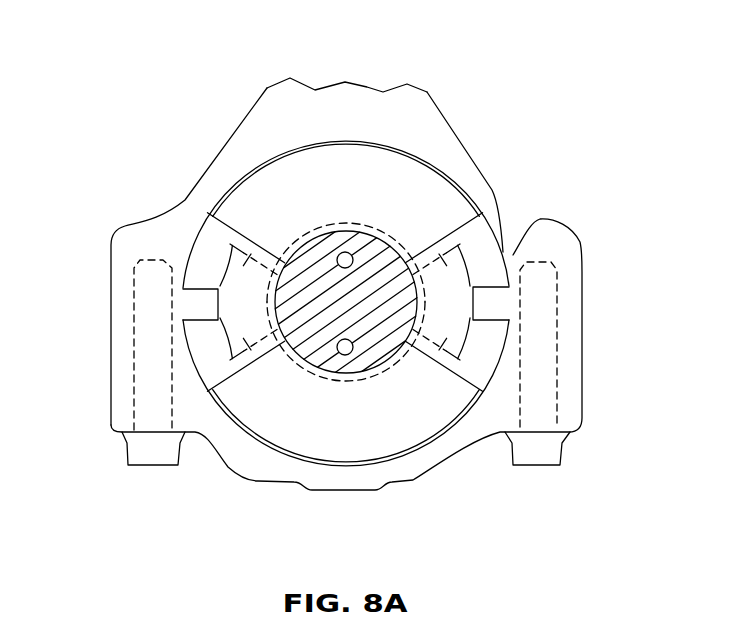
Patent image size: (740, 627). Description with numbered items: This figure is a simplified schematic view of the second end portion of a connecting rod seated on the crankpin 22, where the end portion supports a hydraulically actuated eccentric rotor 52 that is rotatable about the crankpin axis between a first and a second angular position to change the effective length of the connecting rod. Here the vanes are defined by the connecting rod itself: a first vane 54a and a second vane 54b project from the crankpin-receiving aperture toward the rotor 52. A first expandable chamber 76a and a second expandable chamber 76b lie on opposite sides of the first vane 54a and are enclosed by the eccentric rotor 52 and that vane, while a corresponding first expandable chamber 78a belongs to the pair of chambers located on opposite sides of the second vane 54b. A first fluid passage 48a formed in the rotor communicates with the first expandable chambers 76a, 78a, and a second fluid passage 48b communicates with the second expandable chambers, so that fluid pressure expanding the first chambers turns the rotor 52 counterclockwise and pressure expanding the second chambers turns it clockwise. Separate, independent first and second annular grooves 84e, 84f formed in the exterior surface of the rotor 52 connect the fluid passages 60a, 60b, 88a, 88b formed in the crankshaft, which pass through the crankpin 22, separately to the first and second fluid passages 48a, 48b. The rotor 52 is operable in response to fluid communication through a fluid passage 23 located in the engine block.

The crankpin 22 is at (307, 328).
The fluid passage 23 is at (375, 107).
The first fluid passage 48a is at (492, 190).
The second fluid passage 48b is at (253, 252).
The hydraulically actuated eccentric rotor 52 is at (402, 192).
The first vane 54a is at (210, 305).
The second vane 54b is at (490, 302).
The fluid passage 60a is at (337, 259).
The fluid passage 60b is at (340, 354).
The first expandable chamber 76a is at (213, 366).
The second expandable chamber 76b is at (217, 254).
The first expandable chamber 78a is at (483, 260).
The first annular groove 84e is at (345, 260).
The second annular groove 84f is at (380, 366).
The fluid passage 88a is at (345, 236).
The fluid passage 88b is at (342, 358).